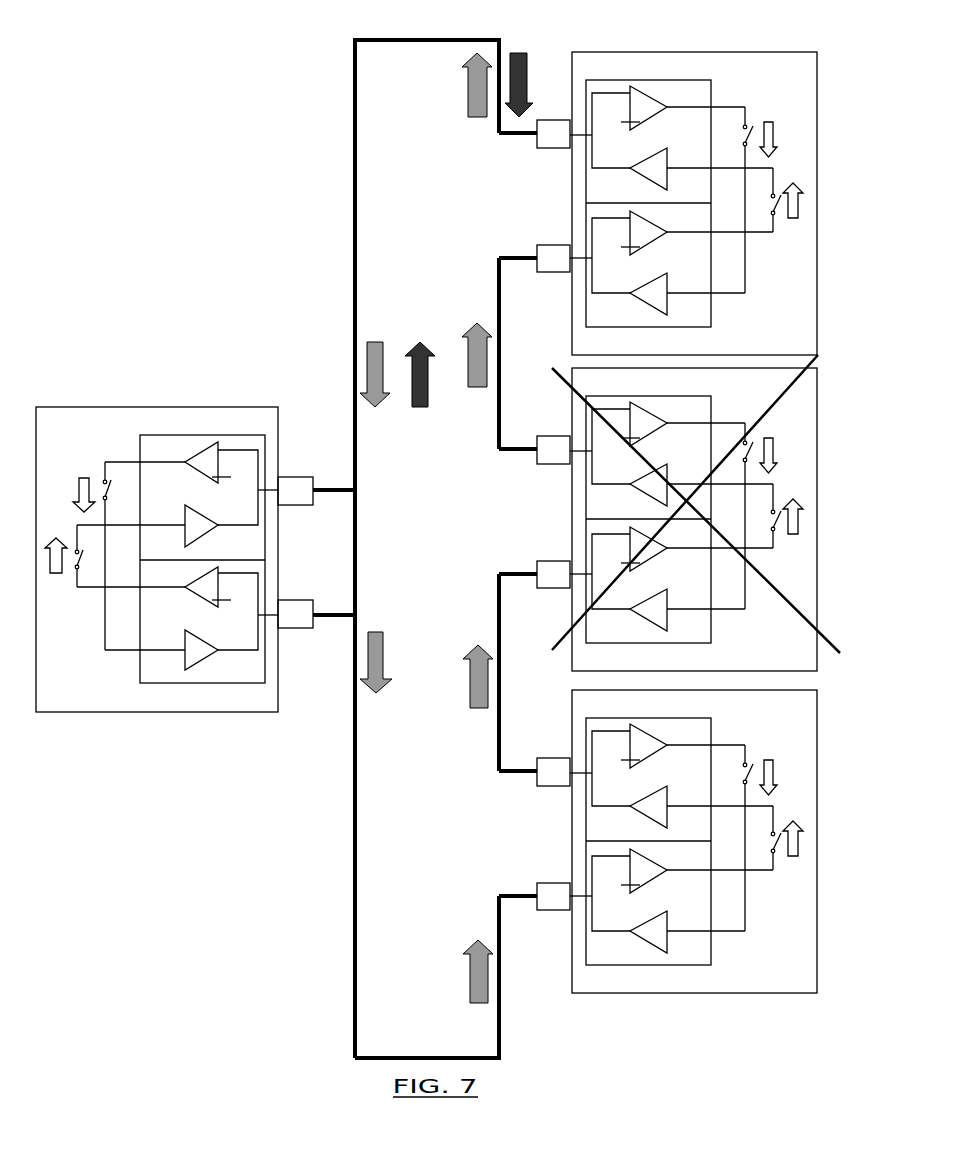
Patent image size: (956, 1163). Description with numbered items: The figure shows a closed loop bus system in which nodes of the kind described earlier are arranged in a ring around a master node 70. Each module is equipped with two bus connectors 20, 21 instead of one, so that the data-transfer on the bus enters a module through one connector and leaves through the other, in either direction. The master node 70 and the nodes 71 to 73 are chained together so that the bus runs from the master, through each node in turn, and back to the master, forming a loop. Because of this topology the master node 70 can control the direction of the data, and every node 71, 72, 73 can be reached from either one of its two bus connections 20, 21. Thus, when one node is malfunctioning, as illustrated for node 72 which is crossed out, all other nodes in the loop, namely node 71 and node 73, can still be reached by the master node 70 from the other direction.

The connector 20 is at (295, 495).
The connector 21 is at (305, 612).
The master node 70 is at (68, 698).
The node 71 is at (807, 325).
The node 72 is at (808, 637).
The node 73 is at (808, 962).